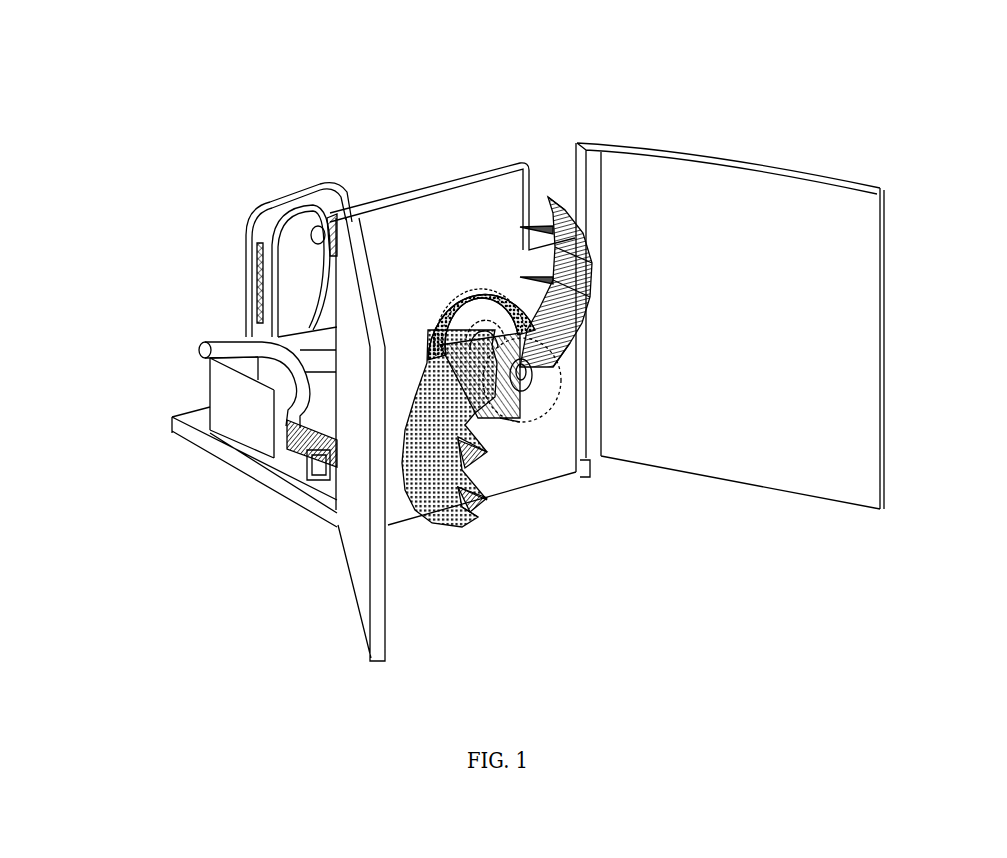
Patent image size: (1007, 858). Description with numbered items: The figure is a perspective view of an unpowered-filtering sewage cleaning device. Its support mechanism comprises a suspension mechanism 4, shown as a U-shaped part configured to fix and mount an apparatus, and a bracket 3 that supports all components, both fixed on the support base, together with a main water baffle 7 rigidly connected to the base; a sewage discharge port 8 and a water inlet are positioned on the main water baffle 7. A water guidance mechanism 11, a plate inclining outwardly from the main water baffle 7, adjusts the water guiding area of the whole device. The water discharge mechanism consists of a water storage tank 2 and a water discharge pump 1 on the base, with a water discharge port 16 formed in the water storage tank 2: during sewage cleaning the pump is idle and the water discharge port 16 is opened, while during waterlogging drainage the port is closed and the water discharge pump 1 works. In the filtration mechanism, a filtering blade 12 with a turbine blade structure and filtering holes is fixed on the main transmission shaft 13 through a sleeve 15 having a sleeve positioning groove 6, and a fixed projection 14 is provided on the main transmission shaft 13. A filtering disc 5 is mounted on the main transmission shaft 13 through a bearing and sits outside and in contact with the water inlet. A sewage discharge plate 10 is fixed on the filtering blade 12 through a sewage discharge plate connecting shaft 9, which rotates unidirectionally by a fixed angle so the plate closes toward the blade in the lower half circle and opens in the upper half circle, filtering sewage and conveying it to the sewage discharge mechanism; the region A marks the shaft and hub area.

The water discharge pump 1 is at (210, 428).
The water storage tank 2 is at (247, 403).
The bracket 3 is at (297, 308).
The suspension mechanism 4 is at (270, 220).
The filtering disc 5 is at (450, 305).
The sleeve positioning groove 6 is at (511, 333).
The main water baffle 7 is at (500, 207).
The sewage discharge port 8 is at (552, 187).
The sewage discharge plate connecting shaft 9 is at (588, 230).
The sewage discharge plate 10 is at (572, 277).
The water guidance mechanism 11 is at (645, 275).
The filtering blade 12 is at (570, 328).
The main transmission shaft 13 is at (537, 386).
The hub region A is at (560, 386).
The fixed projection 14 is at (528, 400).
The sleeve 15 is at (508, 400).
The water discharge port 16 is at (336, 440).